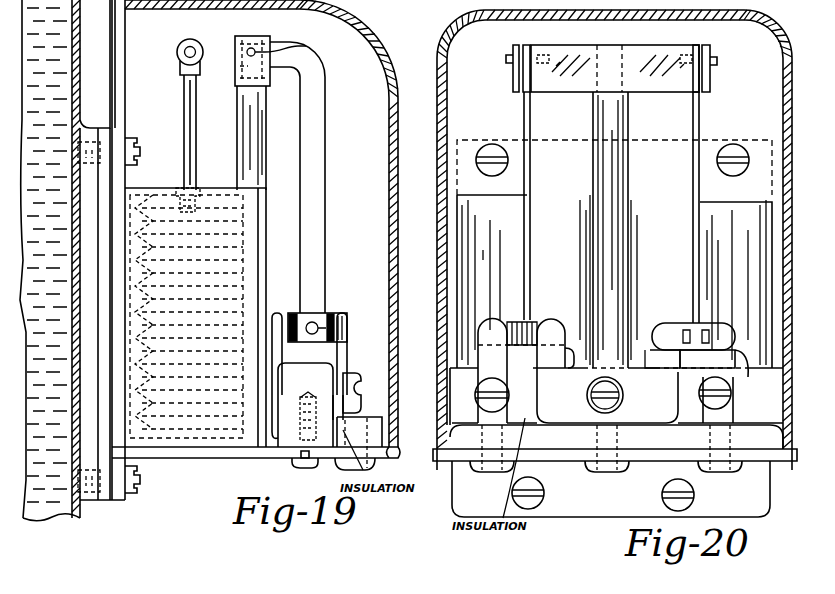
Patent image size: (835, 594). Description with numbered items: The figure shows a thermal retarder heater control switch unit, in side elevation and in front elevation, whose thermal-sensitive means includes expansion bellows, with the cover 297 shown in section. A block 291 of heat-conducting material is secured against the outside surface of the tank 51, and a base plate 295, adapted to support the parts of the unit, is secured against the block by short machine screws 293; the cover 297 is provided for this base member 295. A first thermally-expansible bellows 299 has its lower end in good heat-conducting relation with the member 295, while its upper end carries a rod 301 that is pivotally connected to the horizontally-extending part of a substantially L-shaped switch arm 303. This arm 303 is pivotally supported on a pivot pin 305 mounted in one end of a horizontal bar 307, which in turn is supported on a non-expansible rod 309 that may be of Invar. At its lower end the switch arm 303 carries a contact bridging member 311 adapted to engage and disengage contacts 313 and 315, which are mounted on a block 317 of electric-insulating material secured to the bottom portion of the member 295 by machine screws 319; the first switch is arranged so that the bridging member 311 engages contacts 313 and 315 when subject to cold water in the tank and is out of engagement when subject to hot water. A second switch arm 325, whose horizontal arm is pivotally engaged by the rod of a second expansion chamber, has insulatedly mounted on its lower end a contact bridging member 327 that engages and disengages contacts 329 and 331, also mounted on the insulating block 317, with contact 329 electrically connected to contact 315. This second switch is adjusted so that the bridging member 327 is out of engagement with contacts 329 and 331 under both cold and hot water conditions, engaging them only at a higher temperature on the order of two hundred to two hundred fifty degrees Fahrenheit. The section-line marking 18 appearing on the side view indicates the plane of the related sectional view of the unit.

In FIG. 19, the section line 18 is at (198, 120).
In FIG. 19, the tank 51 is at (66, 296).
In FIG. 19, the block 291 is at (90, 505).
In FIG. 19, the machine screws 293 is at (139, 157).
In FIG. 20, the machine screws 293 is at (485, 143).
In FIG. 19, the base plate 295 is at (127, 40).
In FIG. 19, the cover 297 is at (391, 47).
In FIG. 19, the first thermally-expansible bellows 299 is at (232, 255).
In FIG. 19, the rod 301 is at (184, 90).
In FIG. 19, the switch arm 303 is at (328, 160).
In FIG. 20, the switch arm 303 is at (524, 218).
In FIG. 19, the pivot pin 305 is at (298, 47).
In FIG. 20, the pivot pin 305 is at (506, 56).
In FIG. 19, the horizontal bar 307 is at (262, 30).
In FIG. 20, the horizontal bar 307 is at (644, 38).
In FIG. 19, the non-expansible rod 309 is at (268, 140).
In FIG. 20, the non-expansible rod 309 is at (628, 165).
In FIG. 19, the contact bridging member 311 is at (332, 316).
In FIG. 20, the contact bridging member 311 is at (506, 320).
In FIG. 19, the contact 313 is at (348, 346).
In FIG. 20, the contact 313 is at (480, 340).
In FIG. 20, the contact 315 is at (587, 395).
In FIG. 19, the block of electric-insulating material 317 is at (280, 455).
In FIG. 19, the machine screws 319 is at (300, 462).
In FIG. 20, the switch arm 325 is at (693, 215).
In FIG. 19, the contact bridging member 327 is at (292, 312).
In FIG. 20, the contact bridging member 327 is at (701, 330).
In FIG. 19, the contact 329 is at (305, 405).
In FIG. 20, the contact 329 is at (646, 343).
In FIG. 20, the contact 331 is at (735, 400).